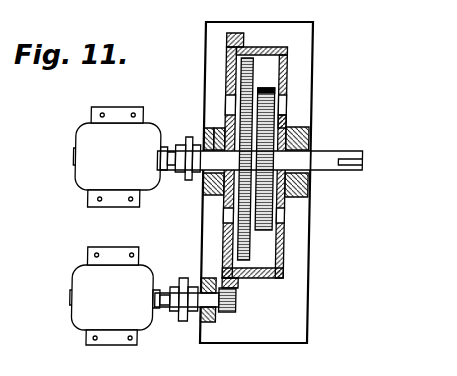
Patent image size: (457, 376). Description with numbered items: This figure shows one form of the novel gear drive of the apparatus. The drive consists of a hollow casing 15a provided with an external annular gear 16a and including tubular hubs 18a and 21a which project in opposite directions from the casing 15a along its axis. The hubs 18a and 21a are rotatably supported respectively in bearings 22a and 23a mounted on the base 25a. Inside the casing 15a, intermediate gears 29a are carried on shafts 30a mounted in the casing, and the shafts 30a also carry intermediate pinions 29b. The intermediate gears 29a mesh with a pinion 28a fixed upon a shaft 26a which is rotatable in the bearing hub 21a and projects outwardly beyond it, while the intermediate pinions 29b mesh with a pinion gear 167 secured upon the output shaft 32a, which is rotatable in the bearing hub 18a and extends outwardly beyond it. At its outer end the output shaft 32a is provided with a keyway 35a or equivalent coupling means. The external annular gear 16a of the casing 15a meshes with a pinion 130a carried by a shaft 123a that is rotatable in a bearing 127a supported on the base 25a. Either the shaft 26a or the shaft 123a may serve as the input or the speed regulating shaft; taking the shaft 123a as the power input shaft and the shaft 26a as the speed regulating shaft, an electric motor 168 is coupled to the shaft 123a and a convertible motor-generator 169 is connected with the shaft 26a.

The hollow casing 15a is at (290, 48).
The external annular gear 16a is at (228, 34).
The tubular hub 18a is at (312, 146).
The tubular hub 21a is at (208, 146).
The bearing 22a is at (312, 192).
The bearing 23a is at (210, 194).
The base 25a is at (303, 323).
The shaft 26a is at (200, 176).
The pinion 28a is at (218, 143).
The intermediate gears 29a is at (288, 65).
The intermediate pinions 29b is at (288, 92).
The shafts 30a is at (287, 105).
The output shaft 32a is at (363, 169).
The keyway 35a is at (362, 154).
The shaft 123a is at (205, 298).
The bearing 127a is at (222, 326).
The pinion 130a is at (238, 300).
The pinion gear 167 is at (288, 125).
The electric motor 168 is at (134, 296).
The convertible motor-generator 169 is at (137, 157).